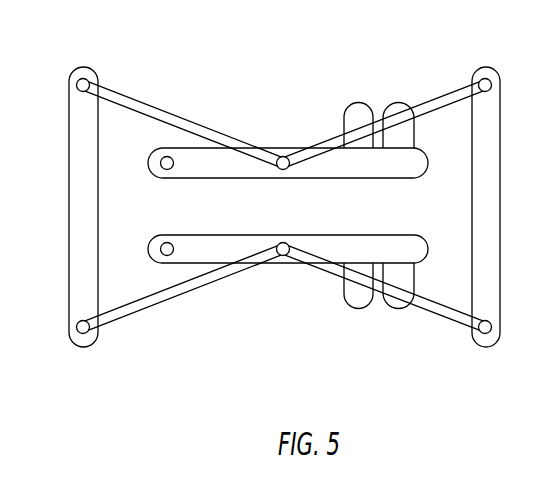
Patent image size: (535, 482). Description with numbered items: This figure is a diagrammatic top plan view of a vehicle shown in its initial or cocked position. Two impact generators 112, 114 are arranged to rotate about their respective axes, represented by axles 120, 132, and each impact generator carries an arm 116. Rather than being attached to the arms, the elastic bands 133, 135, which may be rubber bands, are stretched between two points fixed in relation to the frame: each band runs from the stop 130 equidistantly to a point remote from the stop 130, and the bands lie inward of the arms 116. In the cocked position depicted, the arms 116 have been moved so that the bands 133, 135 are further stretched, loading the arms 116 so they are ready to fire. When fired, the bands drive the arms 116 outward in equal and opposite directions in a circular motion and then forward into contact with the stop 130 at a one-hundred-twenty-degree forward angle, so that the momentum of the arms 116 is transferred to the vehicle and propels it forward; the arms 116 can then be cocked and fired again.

The impact generator 112 is at (284, 127).
The impact generator 114 is at (284, 308).
The arm 116 is at (422, 164).
The axle 120 is at (153, 162).
The stop 130 is at (87, 177).
The axle 132 is at (157, 258).
The elastic band 133 is at (168, 113).
The elastic band 135 is at (135, 313).